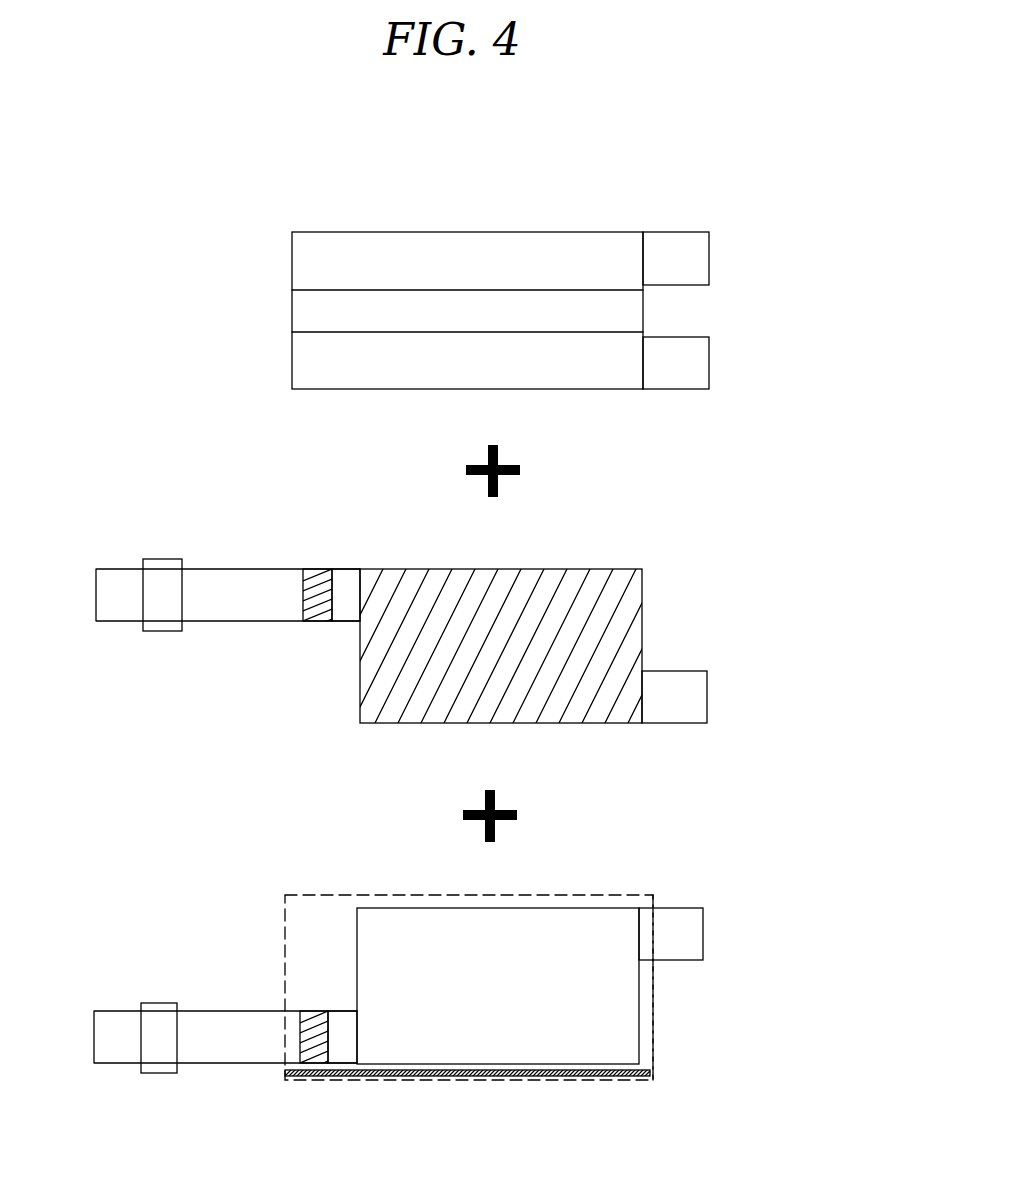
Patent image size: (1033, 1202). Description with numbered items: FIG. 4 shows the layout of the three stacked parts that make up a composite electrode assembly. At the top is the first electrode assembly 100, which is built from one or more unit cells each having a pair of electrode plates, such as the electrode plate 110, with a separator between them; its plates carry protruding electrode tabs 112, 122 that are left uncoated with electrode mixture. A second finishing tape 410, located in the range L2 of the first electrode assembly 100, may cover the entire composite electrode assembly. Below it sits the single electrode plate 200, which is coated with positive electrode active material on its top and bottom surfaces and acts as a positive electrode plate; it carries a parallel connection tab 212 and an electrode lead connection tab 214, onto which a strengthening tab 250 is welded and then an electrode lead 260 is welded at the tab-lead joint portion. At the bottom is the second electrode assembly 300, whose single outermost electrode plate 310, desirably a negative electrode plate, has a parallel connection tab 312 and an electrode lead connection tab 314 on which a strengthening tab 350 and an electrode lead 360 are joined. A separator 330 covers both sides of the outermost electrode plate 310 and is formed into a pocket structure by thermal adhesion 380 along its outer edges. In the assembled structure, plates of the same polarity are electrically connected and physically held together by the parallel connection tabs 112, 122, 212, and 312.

The first electrode assembly 100 is at (555, 215).
The electrode plate 110 is at (443, 248).
The electrode tab 112 is at (672, 253).
The second finishing tape 410 is at (620, 313).
The electrode tab 122 is at (688, 365).
The single electrode plate 200 is at (557, 550).
The parallel connection tab 212 is at (693, 695).
The electrode lead connection tab 214 is at (343, 583).
The strengthening tab 250 is at (317, 578).
The electrode lead 260 is at (118, 585).
The second electrode assembly 300 is at (550, 877).
The single outermost electrode plate 310 is at (640, 998).
The parallel connection tab 312 is at (690, 936).
The electrode lead connection tab 314 is at (338, 1023).
The separator 330 is at (651, 1052).
The strengthening tab 350 is at (308, 1053).
The electrode lead 360 is at (115, 1033).
The thermal adhesion 380 is at (620, 1078).